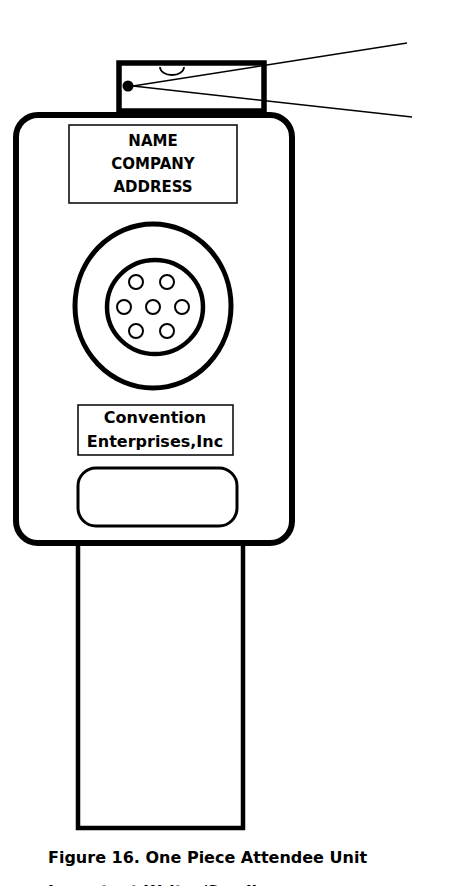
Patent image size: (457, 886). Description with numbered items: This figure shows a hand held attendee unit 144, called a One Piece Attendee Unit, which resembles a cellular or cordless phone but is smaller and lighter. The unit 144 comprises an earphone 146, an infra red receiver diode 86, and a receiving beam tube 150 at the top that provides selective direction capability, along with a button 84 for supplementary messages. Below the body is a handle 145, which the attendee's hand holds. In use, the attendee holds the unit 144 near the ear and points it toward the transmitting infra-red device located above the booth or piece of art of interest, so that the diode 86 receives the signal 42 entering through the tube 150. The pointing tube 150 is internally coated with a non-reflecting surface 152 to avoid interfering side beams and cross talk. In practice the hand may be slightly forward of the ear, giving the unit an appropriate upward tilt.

The signal 42 is at (370, 88).
The button for supplementary messages 84 is at (238, 484).
The infra red receiver diode 86 is at (122, 85).
The hand held attendee unit 144 is at (298, 321).
The handle 145 is at (243, 637).
The earphone 146 is at (231, 287).
The receiving beam tube 150 is at (127, 46).
The non-reflecting surface 152 is at (175, 62).